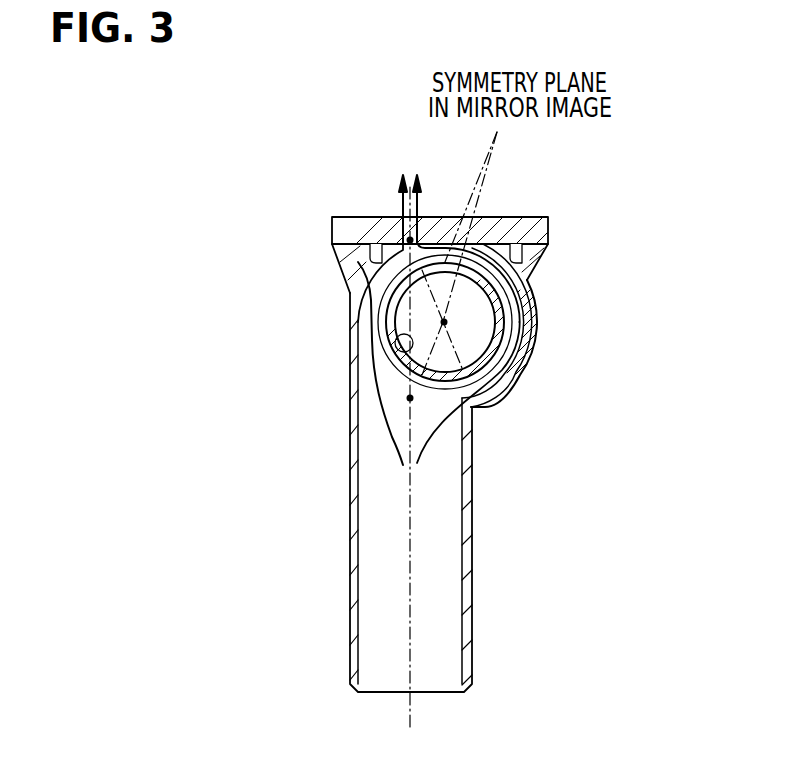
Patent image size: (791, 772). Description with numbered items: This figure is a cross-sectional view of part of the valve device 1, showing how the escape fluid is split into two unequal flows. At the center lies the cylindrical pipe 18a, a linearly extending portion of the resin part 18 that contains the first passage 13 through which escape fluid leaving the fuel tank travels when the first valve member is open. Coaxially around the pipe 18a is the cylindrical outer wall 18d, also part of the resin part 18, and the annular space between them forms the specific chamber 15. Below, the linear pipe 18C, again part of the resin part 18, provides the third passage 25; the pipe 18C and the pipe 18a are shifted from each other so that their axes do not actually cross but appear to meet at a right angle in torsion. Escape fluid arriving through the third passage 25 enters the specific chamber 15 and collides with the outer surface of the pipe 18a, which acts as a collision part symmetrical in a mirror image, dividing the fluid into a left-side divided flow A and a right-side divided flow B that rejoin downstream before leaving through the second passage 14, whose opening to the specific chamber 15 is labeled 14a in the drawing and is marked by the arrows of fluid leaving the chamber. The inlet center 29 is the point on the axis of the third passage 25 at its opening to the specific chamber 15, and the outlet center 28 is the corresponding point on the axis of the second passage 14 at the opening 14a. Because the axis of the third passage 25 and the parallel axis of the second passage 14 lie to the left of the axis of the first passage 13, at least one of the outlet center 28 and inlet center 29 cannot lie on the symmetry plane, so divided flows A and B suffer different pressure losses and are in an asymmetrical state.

The valve device 1 is at (650, 84).
The first passage 13 is at (398, 348).
The second passage 14 is at (408, 286).
The inlet passage 14a is at (403, 210).
The specific chamber 15 is at (515, 365).
The resin part 18 is at (543, 207).
The pipe 18a is at (505, 390).
The pipe 18C is at (473, 581).
The outer wall 18d is at (535, 310).
The third passage 25 is at (365, 505).
The outlet center 28 is at (352, 222).
The inlet center 29 is at (413, 401).
The divided flow A is at (370, 321).
The divided flow B is at (523, 328).